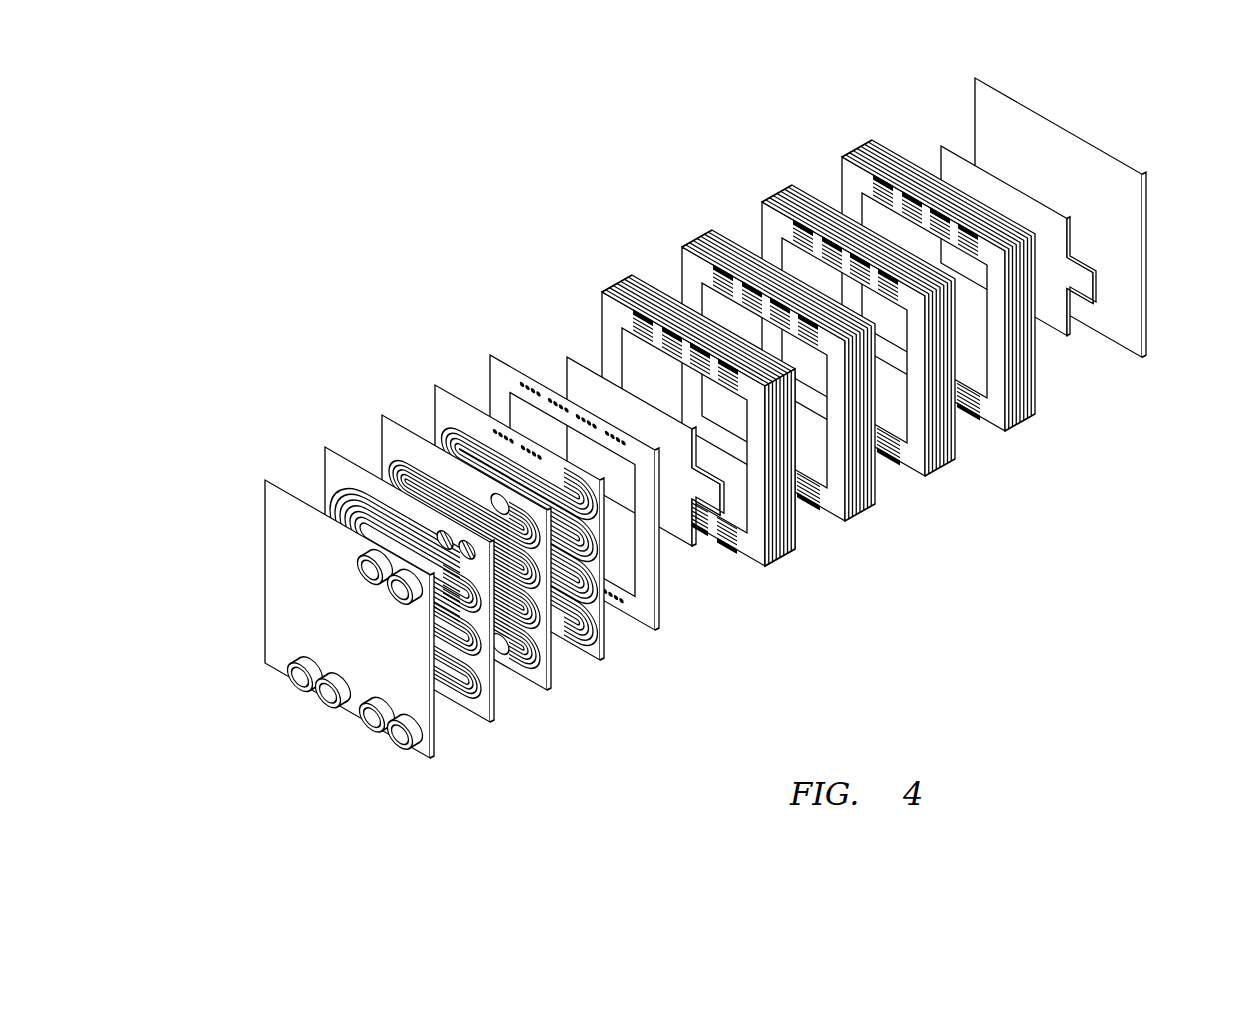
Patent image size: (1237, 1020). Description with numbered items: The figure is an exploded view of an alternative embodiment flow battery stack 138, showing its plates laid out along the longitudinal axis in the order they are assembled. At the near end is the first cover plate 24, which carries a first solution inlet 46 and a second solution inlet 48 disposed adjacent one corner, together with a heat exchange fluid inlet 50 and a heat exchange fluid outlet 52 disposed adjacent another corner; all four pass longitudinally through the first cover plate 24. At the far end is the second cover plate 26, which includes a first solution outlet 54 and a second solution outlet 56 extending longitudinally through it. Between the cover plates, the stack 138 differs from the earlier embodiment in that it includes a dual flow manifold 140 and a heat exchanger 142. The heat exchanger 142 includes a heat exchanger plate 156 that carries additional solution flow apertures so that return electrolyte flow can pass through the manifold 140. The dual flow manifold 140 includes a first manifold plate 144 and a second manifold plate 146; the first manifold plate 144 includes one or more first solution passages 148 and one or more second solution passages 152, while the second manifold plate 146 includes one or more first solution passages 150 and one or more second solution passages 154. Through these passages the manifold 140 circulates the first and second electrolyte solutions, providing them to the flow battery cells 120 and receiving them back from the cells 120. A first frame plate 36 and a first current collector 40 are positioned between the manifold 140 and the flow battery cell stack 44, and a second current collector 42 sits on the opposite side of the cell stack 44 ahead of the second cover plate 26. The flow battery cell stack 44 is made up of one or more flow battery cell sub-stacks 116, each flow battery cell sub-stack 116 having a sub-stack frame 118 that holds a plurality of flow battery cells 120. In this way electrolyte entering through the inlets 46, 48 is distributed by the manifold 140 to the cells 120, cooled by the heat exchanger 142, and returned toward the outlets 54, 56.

The first cover plate 24 is at (263, 643).
The second cover plate 26 is at (1158, 254).
The first frame plate 36 is at (490, 354).
The first current collector 40 is at (695, 549).
The second current collector 42 is at (1075, 338).
The flow battery cell stack 44 is at (897, 339).
The first solution inlet 46 is at (357, 569).
The second solution inlet 48 is at (370, 733).
The heat exchange fluid inlet 50 is at (293, 690).
The heat exchange fluid outlet 52 is at (324, 706).
The first solution outlet 54 is at (388, 592).
The second solution outlet 56 is at (402, 752).
The flow battery cell sub-stack 116 is at (803, 339).
The sub-stack frame 118 is at (783, 557).
The flow battery cells 120 is at (818, 498).
The flow battery stack 138 is at (700, 434).
The dual flow manifold 140 is at (521, 524).
The heat exchanger 142 is at (350, 576).
The first manifold plate 144 is at (588, 549).
The second manifold plate 146 is at (542, 693).
The first solution passages 148 is at (593, 628).
The first solution passages 150 is at (546, 640).
The second solution passages 152 is at (577, 520).
The second solution passages 154 is at (474, 570).
The heat exchanger plate 156 is at (480, 723).